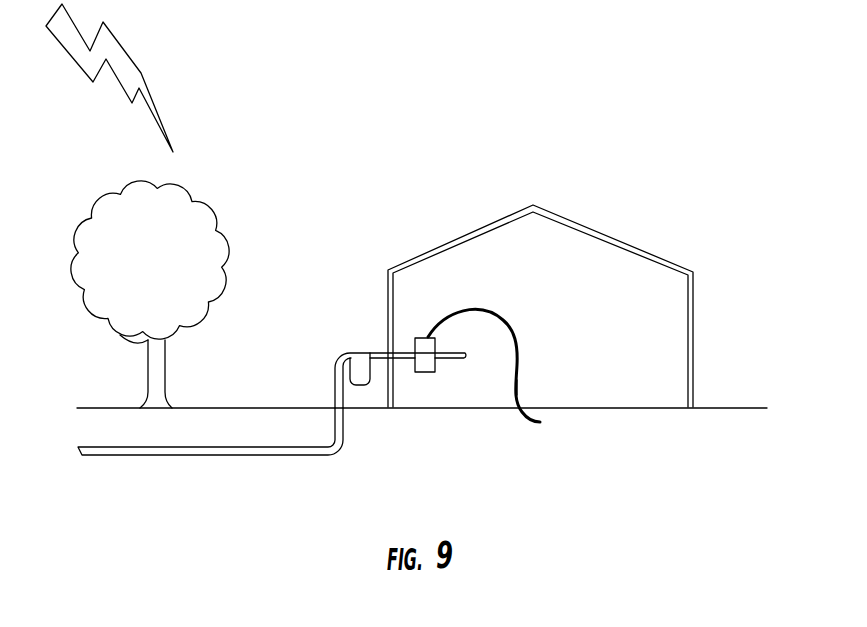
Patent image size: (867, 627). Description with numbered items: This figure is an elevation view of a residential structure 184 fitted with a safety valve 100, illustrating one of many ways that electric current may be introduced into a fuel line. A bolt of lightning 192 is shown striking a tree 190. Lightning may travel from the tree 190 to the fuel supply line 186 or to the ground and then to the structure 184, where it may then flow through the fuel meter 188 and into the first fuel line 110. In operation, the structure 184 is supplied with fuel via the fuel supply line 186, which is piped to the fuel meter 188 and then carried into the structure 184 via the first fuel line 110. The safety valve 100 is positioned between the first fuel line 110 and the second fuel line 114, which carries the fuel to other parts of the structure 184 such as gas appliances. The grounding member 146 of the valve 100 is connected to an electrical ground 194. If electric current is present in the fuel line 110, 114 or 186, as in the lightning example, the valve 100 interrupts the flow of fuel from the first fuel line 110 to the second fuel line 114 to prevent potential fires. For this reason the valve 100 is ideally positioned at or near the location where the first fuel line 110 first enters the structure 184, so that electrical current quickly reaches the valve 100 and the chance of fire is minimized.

The safety valve 100 is at (428, 370).
The first fuel line 110 is at (407, 357).
The second fuel line 114 is at (463, 358).
The grounding member 146 is at (518, 362).
The structure 184 is at (607, 255).
The fuel supply line 186 is at (217, 450).
The fuel meter 188 is at (357, 369).
The tree 190 is at (210, 210).
The bolt of lightning 192 is at (118, 62).
The electrical ground 194 is at (705, 407).